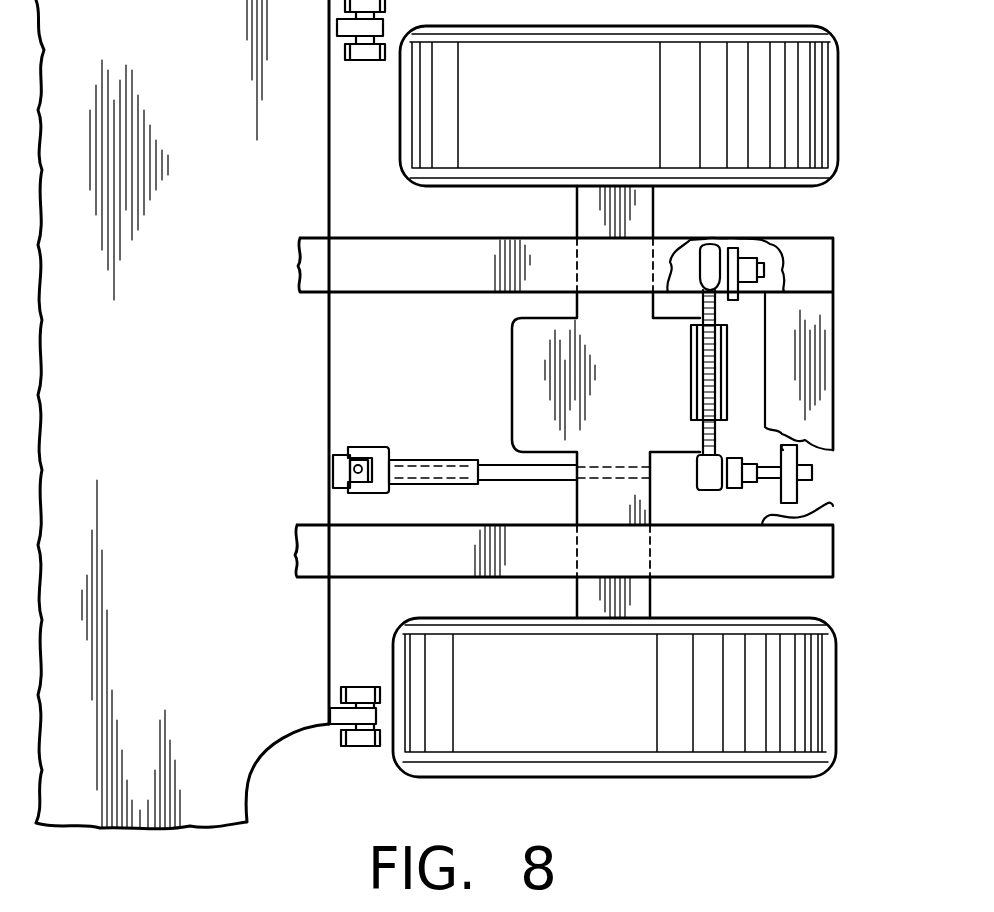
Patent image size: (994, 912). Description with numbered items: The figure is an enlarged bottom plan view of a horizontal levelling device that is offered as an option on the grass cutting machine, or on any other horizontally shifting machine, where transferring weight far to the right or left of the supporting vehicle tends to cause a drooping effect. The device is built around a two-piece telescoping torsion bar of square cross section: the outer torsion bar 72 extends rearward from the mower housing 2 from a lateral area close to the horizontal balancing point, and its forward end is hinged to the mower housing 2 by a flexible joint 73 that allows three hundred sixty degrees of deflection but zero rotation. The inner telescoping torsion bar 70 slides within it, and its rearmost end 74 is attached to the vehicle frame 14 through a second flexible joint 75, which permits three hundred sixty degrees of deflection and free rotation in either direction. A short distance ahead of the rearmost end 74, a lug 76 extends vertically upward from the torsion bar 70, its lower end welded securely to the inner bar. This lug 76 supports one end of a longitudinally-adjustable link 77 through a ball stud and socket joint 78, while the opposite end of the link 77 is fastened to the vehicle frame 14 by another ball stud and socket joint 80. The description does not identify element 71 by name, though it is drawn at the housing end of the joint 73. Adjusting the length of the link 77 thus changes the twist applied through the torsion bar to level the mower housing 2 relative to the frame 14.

The mower housing 2 is at (86, 424).
The vehicle frame 14 is at (424, 569).
The inner telescoping torsion bar 70 is at (487, 465).
The clevis mount 71 is at (331, 458).
The outer torsion bar 72 is at (420, 460).
The flexible joint 73 is at (368, 447).
The rearmost end 74 is at (812, 472).
The flexible joint 75 is at (795, 504).
The lug 76 is at (734, 488).
The longitudinally-adjustable link 77 is at (730, 364).
The ball stud and socket joint 78 is at (700, 455).
The ball stud and socket joint 80 is at (722, 250).